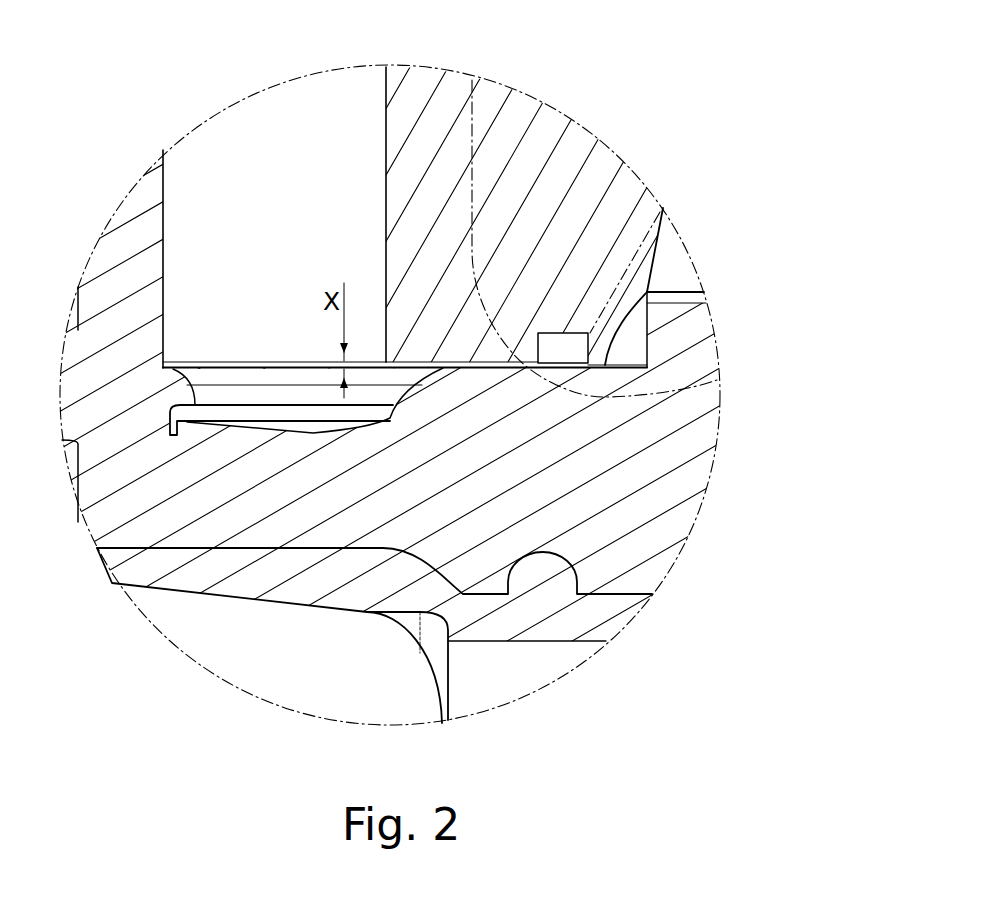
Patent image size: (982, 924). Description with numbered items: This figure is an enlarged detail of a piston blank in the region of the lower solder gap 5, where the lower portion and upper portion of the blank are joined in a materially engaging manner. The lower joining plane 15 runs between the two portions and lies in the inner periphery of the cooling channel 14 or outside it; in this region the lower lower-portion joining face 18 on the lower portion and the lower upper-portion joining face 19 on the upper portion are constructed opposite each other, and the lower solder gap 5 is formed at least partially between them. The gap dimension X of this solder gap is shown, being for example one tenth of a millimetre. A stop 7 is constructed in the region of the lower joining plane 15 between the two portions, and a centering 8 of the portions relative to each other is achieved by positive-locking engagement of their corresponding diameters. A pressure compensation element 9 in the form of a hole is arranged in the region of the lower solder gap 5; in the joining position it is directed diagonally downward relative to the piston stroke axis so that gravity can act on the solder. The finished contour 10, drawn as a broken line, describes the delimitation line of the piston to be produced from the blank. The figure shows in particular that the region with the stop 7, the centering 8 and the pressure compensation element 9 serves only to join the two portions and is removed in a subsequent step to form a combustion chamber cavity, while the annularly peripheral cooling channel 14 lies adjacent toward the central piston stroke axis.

The lower solder gap 5 is at (468, 369).
The stop 7 is at (633, 366).
The centering 8 is at (622, 378).
The pressure compensation element 9 is at (562, 283).
The finished contour 10 is at (475, 150).
The cooling channel 14 is at (284, 210).
The lower joining plane 15 is at (676, 360).
The lower lower-portion joining face 18 is at (530, 369).
The lower upper-portion joining face 19 is at (647, 292).